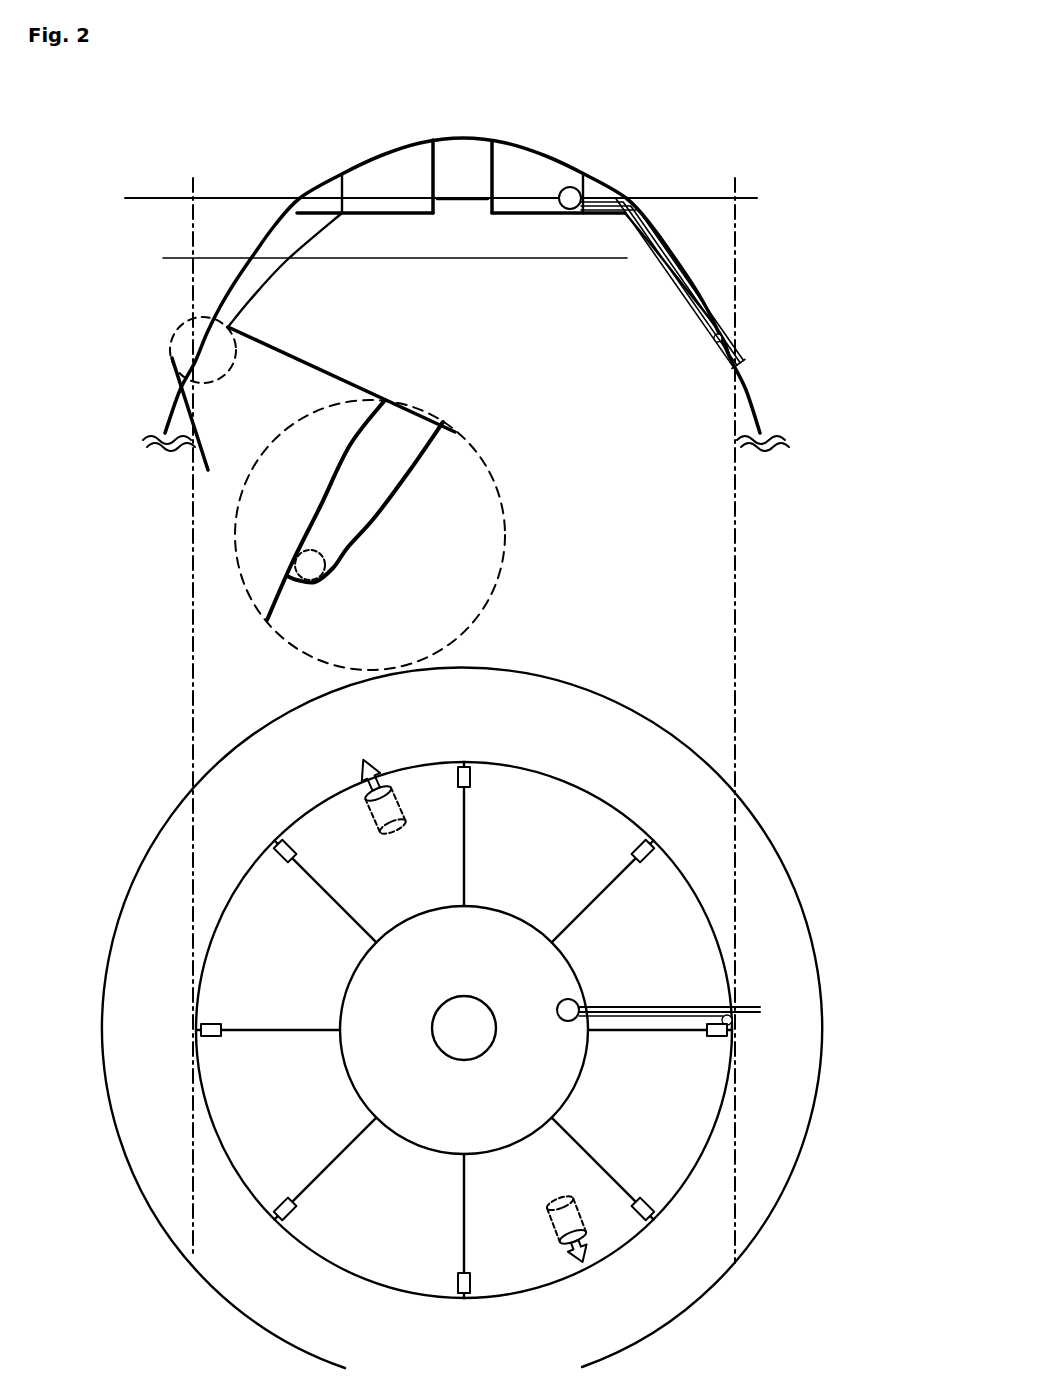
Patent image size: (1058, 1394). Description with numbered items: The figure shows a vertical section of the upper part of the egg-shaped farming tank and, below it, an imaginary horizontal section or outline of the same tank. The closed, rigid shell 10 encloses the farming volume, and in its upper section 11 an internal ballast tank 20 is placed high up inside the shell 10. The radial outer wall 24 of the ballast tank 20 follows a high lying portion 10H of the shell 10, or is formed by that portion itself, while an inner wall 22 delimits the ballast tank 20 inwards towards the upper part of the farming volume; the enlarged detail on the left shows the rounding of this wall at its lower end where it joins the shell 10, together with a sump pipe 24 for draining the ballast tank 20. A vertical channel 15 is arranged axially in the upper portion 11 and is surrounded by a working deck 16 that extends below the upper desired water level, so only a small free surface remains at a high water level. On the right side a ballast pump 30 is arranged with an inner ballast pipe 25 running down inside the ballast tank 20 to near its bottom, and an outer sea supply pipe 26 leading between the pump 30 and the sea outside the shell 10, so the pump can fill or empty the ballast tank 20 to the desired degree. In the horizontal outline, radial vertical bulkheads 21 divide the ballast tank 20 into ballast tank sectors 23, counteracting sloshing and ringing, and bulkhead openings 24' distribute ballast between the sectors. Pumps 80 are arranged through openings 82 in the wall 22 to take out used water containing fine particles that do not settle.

The shell 10 is at (502, 753).
The high lying portion of the shell 10H is at (207, 383).
The upper section of the shell 11 is at (514, 45).
The vertical channel 15 is at (356, 536).
The working deck 16 is at (381, 698).
The ballast tank 20 is at (660, 256).
The bulkhead 21 is at (464, 1030).
The inner wall 22 is at (412, 884).
The ballast tank sector 23 is at (499, 989).
The outer wall / sump pipe 24 is at (621, 737).
The bulkhead opening 24' is at (491, 771).
The ballast pipe 25 is at (742, 679).
The outer ballast supply pipe 26 is at (754, 623).
The ballast pump 30 is at (627, 562).
The pump 80 is at (455, 823).
The opening 82 is at (735, 1245).